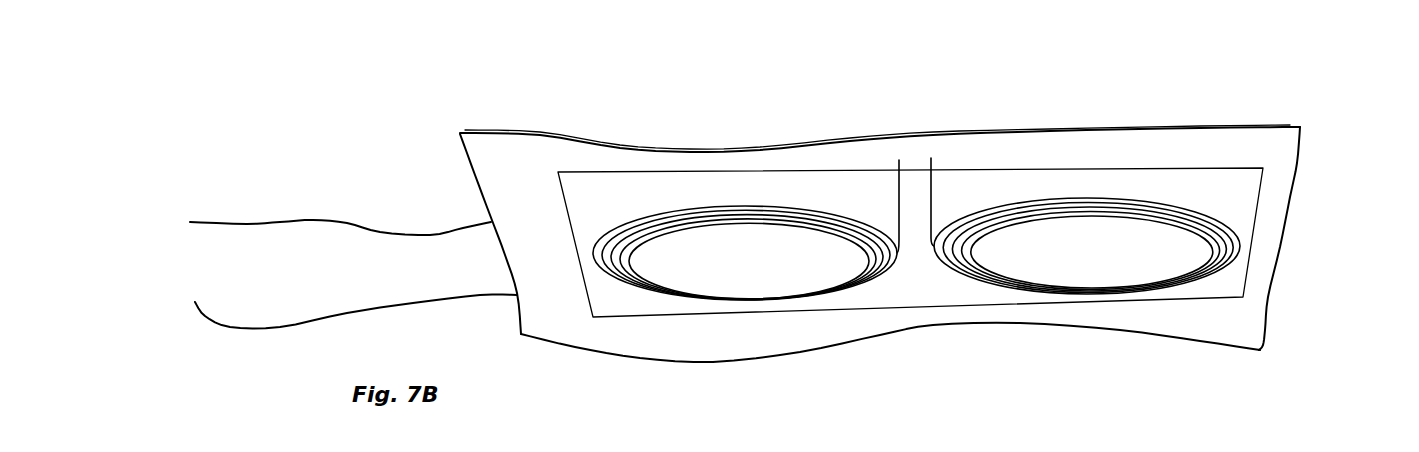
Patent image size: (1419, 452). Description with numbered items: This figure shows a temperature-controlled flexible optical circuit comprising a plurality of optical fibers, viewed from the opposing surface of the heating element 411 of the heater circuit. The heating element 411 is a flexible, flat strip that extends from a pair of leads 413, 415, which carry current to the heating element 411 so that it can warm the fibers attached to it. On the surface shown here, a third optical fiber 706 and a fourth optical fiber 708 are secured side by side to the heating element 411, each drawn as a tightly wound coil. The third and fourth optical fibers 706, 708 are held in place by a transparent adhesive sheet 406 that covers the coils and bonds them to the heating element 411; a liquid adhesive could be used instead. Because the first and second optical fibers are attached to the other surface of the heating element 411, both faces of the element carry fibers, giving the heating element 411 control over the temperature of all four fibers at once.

The transparent adhesive sheet 406 is at (1212, 90).
The heating element 411 is at (525, 158).
The lead 413 is at (262, 222).
The lead 415 is at (368, 313).
The third optical fiber 706 is at (770, 205).
The fourth optical fiber 708 is at (1052, 203).